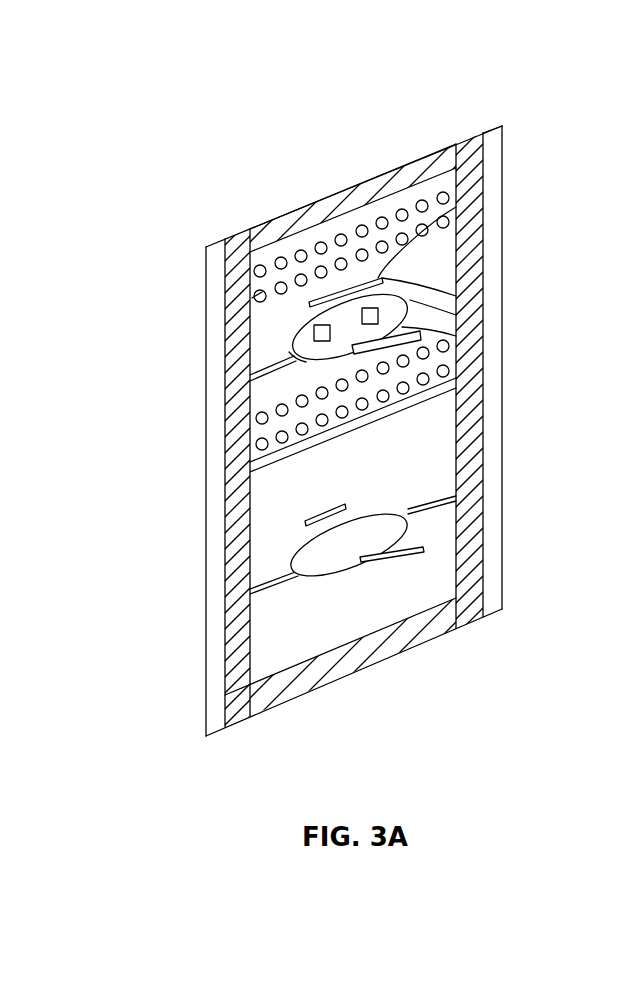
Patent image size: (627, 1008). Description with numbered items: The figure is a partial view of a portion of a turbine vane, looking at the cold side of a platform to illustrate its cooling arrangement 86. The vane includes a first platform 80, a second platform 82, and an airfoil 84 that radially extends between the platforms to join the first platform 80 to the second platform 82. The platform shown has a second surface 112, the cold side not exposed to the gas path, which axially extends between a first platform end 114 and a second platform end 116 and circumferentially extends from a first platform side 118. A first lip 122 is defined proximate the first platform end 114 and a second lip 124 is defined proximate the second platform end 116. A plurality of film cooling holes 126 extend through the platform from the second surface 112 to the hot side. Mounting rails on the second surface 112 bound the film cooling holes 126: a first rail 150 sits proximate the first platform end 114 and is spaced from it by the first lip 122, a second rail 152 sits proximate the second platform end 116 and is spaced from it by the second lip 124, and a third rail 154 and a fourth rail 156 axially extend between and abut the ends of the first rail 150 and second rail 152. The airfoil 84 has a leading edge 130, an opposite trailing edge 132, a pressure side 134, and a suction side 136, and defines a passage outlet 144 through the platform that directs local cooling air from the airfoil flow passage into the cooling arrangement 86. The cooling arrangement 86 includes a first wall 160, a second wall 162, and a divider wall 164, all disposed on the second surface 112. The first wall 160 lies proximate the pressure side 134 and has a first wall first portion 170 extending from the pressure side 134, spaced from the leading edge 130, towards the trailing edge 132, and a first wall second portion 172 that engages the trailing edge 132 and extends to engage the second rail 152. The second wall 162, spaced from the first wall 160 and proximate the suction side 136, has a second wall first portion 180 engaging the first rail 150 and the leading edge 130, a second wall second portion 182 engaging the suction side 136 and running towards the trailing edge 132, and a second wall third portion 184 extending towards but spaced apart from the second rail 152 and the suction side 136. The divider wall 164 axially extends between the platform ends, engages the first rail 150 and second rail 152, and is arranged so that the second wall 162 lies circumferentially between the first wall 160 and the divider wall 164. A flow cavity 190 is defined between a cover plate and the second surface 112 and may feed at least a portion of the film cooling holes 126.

The first platform 80 is at (354, 449).
The second platform 82 is at (397, 699).
The airfoil 84 is at (287, 328).
The cooling arrangement 86 is at (272, 312).
The second surface 112 is at (262, 440).
The first platform end 114 is at (206, 512).
The second platform end 116 is at (502, 525).
The first platform side 118 is at (325, 199).
The first lip 122 is at (216, 258).
The second lip 124 is at (483, 142).
The film cooling holes 126 is at (426, 190).
The leading edge 130 is at (290, 337).
The trailing edge 132 is at (458, 296).
The pressure side 134 is at (298, 316).
The suction side 136 is at (444, 320).
The passage outlet 144 is at (370, 281).
The first rail 150 is at (262, 292).
The second rail 152 is at (483, 168).
The third rail 154 is at (390, 190).
The fourth rail 156 is at (291, 686).
The first wall 160 is at (456, 207).
The second wall 162 is at (322, 342).
The divider wall 164 is at (427, 405).
The first wall first portion 170 is at (345, 292).
The first wall second portion 172 is at (378, 310).
The second wall first portion 180 is at (289, 352).
The second wall second portion 182 is at (318, 380).
The second wall third portion 184 is at (440, 346).
The flow cavity 190 is at (400, 607).